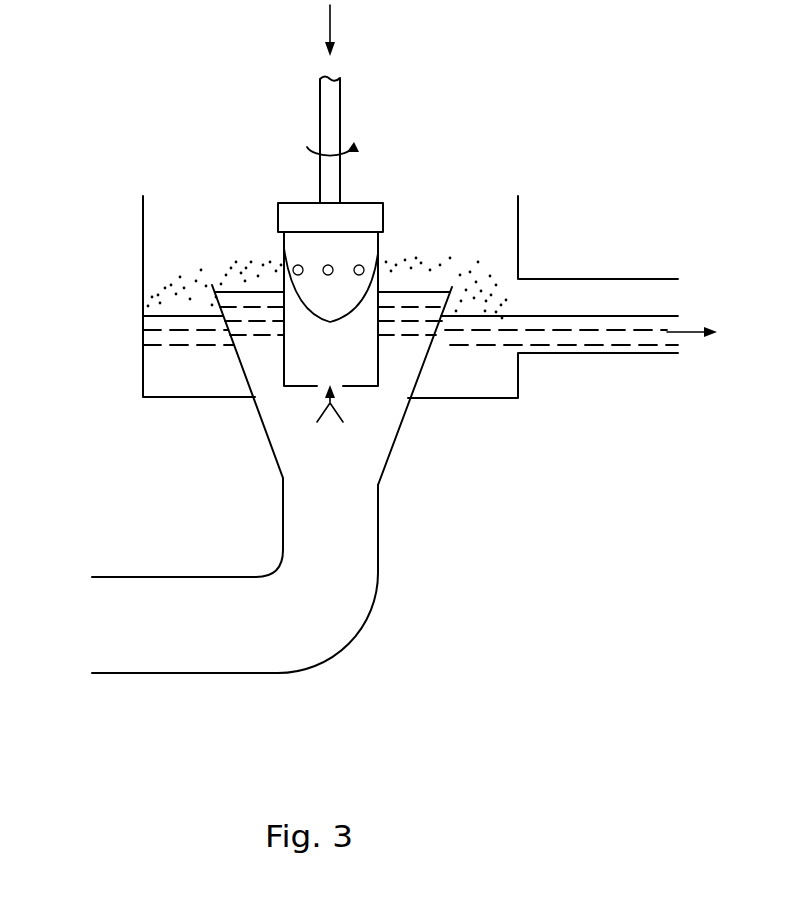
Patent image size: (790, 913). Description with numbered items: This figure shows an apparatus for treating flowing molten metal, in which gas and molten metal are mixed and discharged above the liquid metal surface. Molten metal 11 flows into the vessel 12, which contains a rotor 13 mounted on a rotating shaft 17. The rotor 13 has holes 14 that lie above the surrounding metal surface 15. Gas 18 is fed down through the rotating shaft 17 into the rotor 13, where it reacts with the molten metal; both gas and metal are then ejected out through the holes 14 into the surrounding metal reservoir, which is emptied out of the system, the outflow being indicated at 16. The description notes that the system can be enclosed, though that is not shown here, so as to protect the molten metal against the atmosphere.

The molten metal 11 is at (110, 623).
The vessel 12 is at (398, 437).
The rotor 13 is at (378, 352).
The holes 14 is at (380, 258).
The surrounding metal surface 15 is at (413, 292).
The outer liquid level 16 is at (503, 315).
The rotating shaft 17 is at (340, 102).
The gas 18 is at (330, 33).